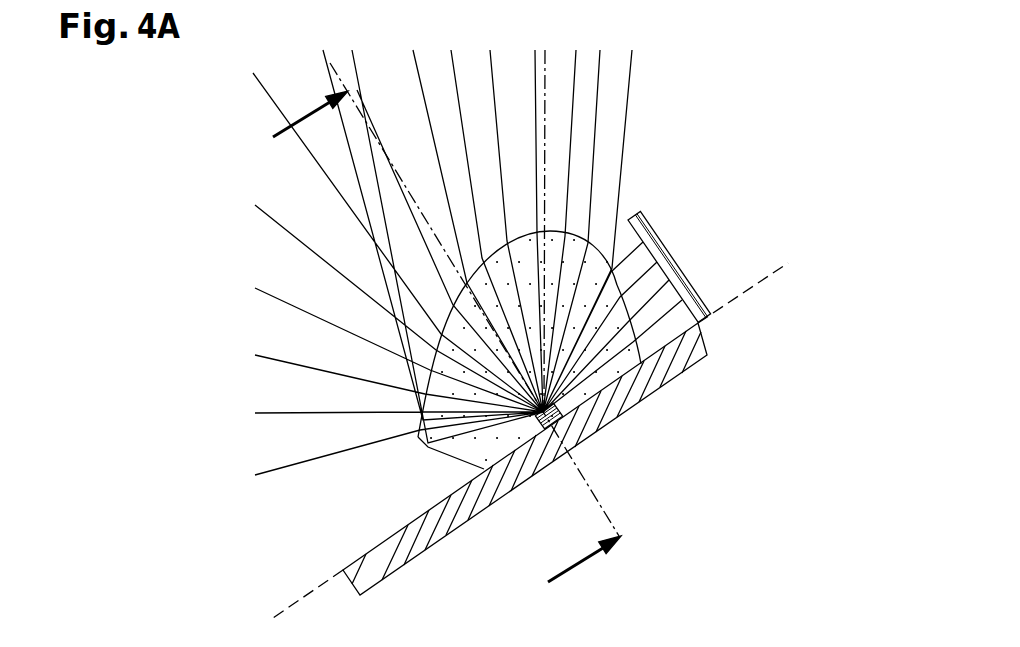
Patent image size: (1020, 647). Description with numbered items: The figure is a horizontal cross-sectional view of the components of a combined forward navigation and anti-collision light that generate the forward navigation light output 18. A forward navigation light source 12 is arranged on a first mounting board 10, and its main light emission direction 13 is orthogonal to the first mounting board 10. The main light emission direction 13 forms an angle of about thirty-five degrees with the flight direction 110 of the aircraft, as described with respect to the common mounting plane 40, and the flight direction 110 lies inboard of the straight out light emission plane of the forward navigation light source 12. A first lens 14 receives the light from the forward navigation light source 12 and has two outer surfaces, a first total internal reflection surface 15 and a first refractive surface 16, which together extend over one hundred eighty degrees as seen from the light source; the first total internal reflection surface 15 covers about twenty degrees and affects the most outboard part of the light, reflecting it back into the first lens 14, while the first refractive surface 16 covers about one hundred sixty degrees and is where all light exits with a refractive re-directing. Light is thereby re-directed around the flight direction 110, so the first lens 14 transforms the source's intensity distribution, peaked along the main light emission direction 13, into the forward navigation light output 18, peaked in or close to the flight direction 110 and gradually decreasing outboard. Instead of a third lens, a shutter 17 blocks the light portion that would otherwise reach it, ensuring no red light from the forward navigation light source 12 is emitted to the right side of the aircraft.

The first mounting board 10 is at (457, 523).
The forward navigation light source 12 is at (563, 423).
The main light emission direction 13 is at (333, 67).
The first lens 14 is at (492, 450).
The first total internal reflection surface 15 is at (440, 450).
The first refractive surface 16 is at (577, 237).
The shutter 17 is at (655, 227).
The forward navigation light output 18 is at (672, 128).
The common mounting plane 40 is at (292, 603).
The flight direction 110 is at (545, 83).